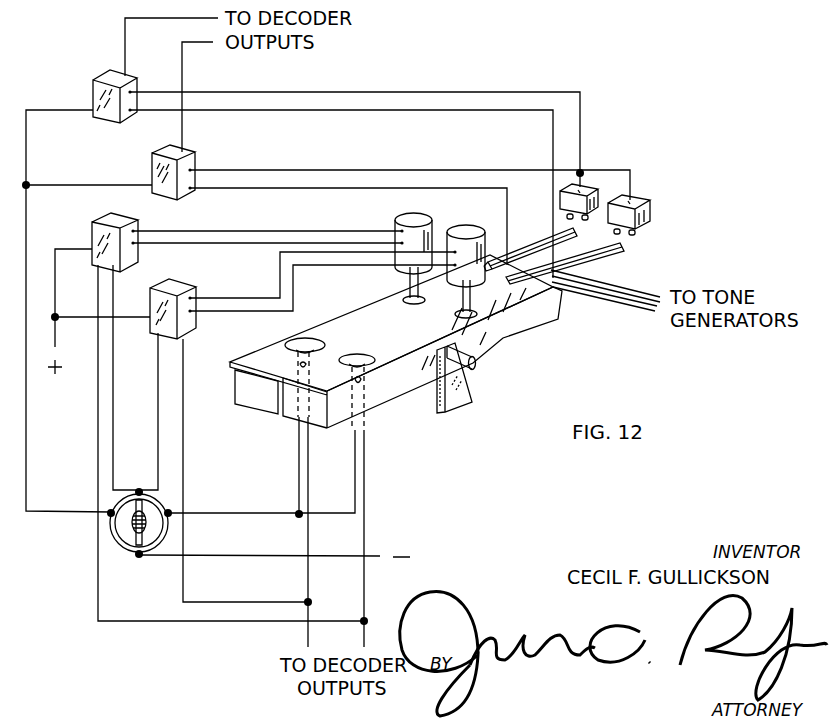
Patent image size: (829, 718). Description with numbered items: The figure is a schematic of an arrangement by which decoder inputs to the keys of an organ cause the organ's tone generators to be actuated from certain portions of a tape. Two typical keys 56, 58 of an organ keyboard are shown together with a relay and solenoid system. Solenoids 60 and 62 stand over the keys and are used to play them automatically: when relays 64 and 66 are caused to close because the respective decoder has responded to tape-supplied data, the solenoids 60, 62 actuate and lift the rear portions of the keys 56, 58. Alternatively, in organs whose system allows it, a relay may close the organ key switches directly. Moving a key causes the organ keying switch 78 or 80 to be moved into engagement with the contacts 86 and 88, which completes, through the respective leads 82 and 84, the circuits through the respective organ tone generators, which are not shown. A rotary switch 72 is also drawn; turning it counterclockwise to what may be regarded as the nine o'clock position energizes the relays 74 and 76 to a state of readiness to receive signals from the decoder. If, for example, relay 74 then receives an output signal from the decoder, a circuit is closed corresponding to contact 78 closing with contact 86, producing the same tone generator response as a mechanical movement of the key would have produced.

The key 56 is at (253, 402).
The key 58 is at (372, 413).
The solenoid 60 is at (399, 214).
The solenoid 62 is at (462, 228).
The relay 64 is at (96, 236).
The relay 66 is at (196, 320).
The switch 72 is at (128, 552).
The relay 74 is at (194, 160).
The relay 76 is at (106, 73).
The organ keying switch 78 is at (543, 243).
The organ keying switch 80 is at (620, 258).
The lead 82 is at (632, 279).
The lead 84 is at (628, 302).
The contact 86 is at (586, 185).
The contact 88 is at (651, 200).